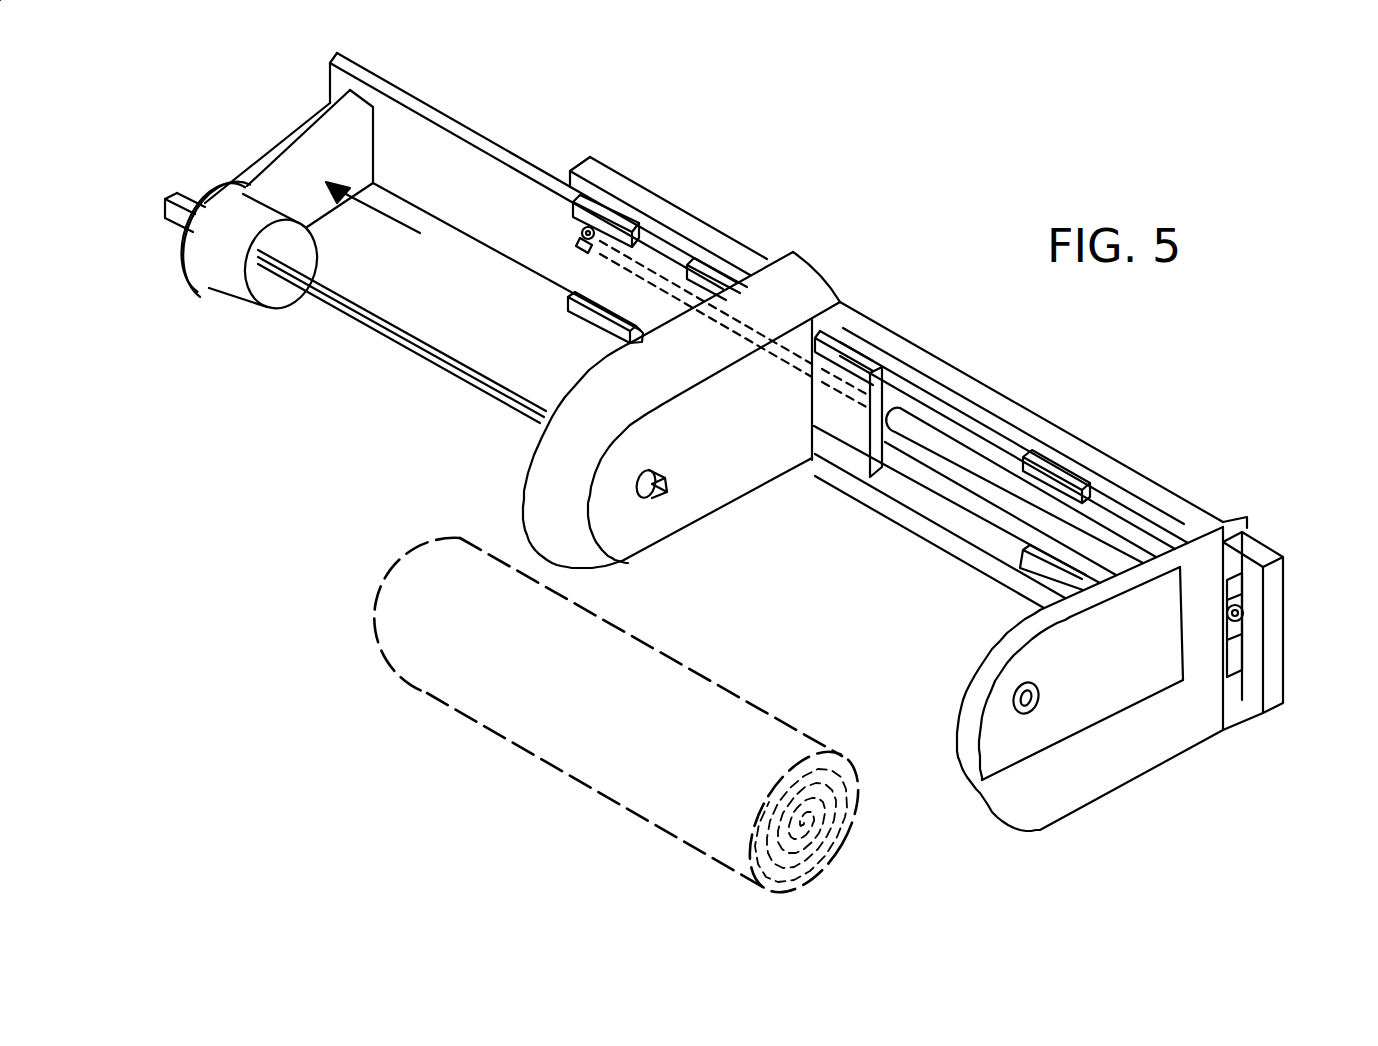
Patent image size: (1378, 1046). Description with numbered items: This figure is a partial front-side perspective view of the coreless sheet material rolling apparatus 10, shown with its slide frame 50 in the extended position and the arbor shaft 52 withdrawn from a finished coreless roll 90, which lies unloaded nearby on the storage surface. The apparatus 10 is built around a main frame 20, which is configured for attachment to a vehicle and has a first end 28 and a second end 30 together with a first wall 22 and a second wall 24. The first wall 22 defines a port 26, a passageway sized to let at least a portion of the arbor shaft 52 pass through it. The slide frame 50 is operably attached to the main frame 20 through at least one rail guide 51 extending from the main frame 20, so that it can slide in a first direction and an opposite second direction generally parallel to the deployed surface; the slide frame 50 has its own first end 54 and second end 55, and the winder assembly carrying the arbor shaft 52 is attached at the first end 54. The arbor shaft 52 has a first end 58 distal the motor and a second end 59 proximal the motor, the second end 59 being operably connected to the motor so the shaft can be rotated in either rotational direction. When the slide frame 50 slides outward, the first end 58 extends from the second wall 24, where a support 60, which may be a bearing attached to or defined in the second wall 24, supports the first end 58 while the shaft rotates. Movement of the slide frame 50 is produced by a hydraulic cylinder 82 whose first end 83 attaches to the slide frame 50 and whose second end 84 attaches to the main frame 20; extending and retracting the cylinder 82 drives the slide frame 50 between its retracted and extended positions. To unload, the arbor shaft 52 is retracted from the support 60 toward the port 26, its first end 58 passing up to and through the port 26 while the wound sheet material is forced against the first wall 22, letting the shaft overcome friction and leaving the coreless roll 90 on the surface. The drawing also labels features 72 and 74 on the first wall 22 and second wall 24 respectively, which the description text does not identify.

The coreless sheet material rolling apparatus 10 is at (678, 178).
The main frame 20 is at (742, 258).
The first wall 22 is at (773, 470).
The second wall 24 is at (1105, 700).
The port 26 is at (653, 497).
The first end 28 is at (572, 158).
The second end 30 is at (1274, 668).
The slide frame 50 is at (466, 217).
The rail guide 51 is at (596, 311).
The arbor shaft 52 is at (393, 339).
The first end 54 is at (320, 64).
The second end 55 is at (878, 463).
The first end 58 is at (667, 487).
The second end 59 is at (197, 203).
The support 60 is at (1030, 690).
The housing shell 72 is at (548, 487).
The housing rim 74 is at (1088, 788).
The hydraulic cylinder 82 is at (1099, 530).
The first end 83 is at (578, 228).
The second end 84 is at (1238, 605).
The coreless roll 90 is at (542, 762).